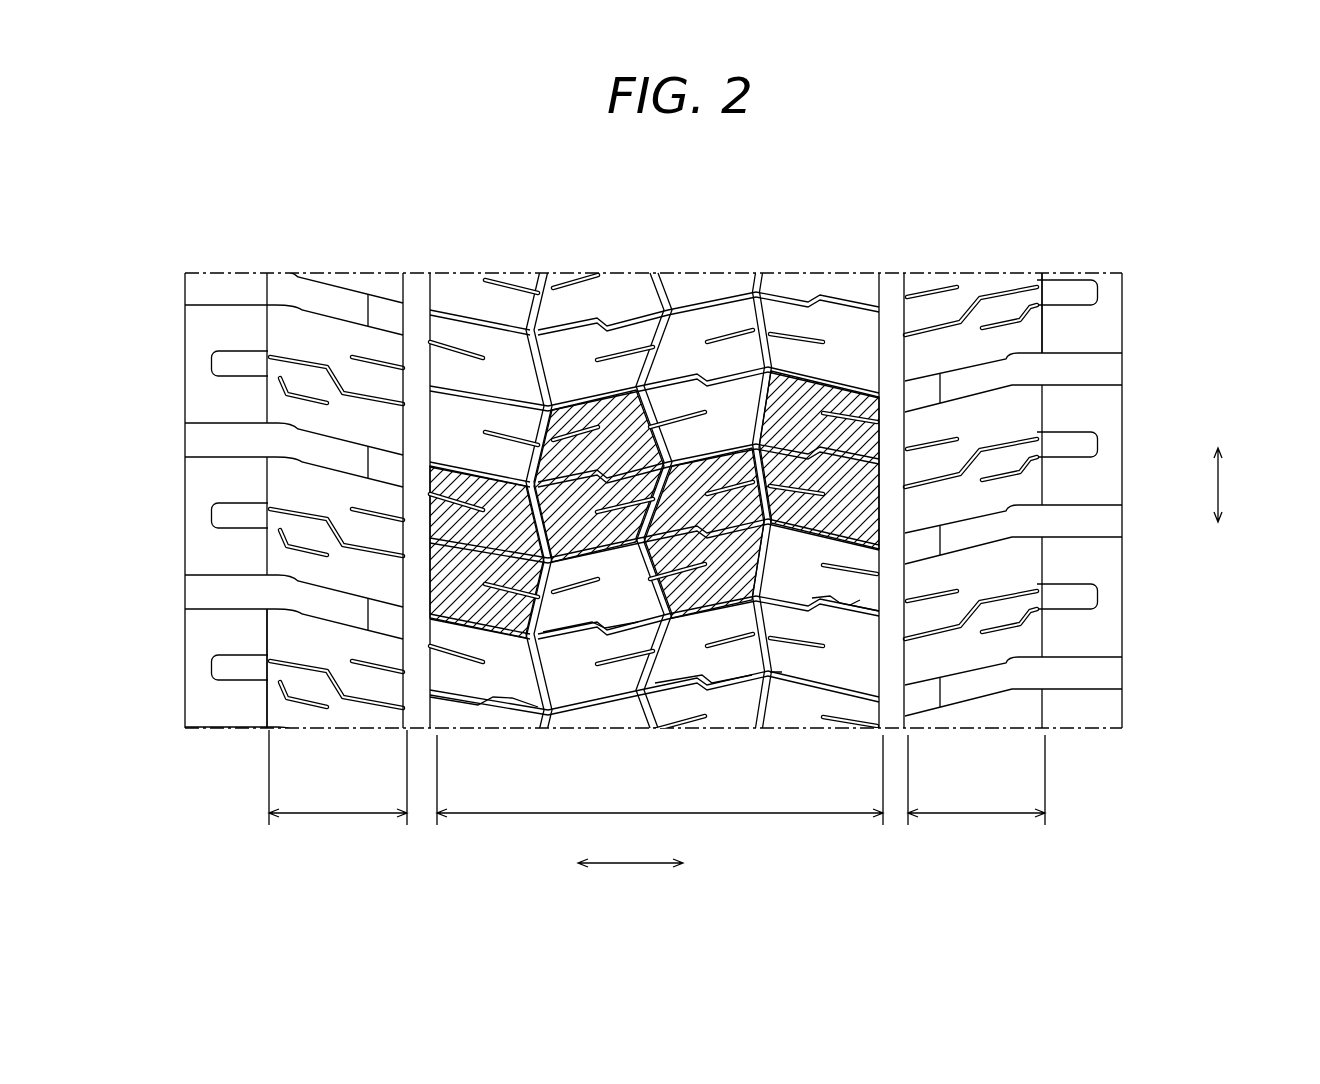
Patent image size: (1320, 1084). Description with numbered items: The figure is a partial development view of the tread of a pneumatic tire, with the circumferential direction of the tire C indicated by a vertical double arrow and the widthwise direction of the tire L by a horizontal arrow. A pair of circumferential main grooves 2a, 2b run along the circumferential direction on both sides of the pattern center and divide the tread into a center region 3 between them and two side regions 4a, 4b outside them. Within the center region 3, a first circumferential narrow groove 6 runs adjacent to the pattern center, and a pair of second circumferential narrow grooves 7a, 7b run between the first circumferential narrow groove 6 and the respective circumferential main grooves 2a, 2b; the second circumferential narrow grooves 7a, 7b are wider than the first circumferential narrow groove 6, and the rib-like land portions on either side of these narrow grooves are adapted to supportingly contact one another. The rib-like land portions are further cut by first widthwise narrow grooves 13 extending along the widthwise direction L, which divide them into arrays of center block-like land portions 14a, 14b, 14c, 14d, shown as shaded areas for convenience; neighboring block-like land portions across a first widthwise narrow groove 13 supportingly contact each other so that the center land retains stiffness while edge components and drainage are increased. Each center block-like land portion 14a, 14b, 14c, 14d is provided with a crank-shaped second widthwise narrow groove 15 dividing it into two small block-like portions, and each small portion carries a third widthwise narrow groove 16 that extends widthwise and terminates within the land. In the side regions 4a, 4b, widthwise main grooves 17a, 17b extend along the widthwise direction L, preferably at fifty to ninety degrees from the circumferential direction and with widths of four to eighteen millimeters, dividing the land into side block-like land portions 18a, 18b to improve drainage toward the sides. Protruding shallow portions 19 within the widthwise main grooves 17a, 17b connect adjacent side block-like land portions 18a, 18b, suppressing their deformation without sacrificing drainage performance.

The circumferential main groove 2a is at (418, 292).
The circumferential main groove 2b is at (892, 278).
The center region 3 is at (660, 790).
The side region 4a is at (338, 789).
The side region 4b is at (976, 791).
The first circumferential narrow groove 6 is at (656, 278).
The second circumferential narrow groove 7a is at (546, 280).
The second circumferential narrow groove 7b is at (758, 285).
The first widthwise narrow groove 13 is at (453, 465).
The center block-like land portion 14a is at (513, 487).
The center block-like land portion 14b is at (615, 405).
The center block-like land portion 14c is at (703, 473).
The center block-like land portion 14d is at (812, 392).
The second widthwise narrow groove 15 is at (625, 720).
The third widthwise narrow groove 16 is at (782, 672).
The widthwise main groove 17a is at (380, 310).
The widthwise main groove 17b is at (1100, 355).
The side block-like land portion 18a is at (325, 338).
The side block-like land portion 18b is at (1020, 420).
The protruding shallow portion 19 is at (313, 457).
The widthwise direction of the tire L is at (630, 879).
The circumferential direction of the tire C is at (1230, 485).